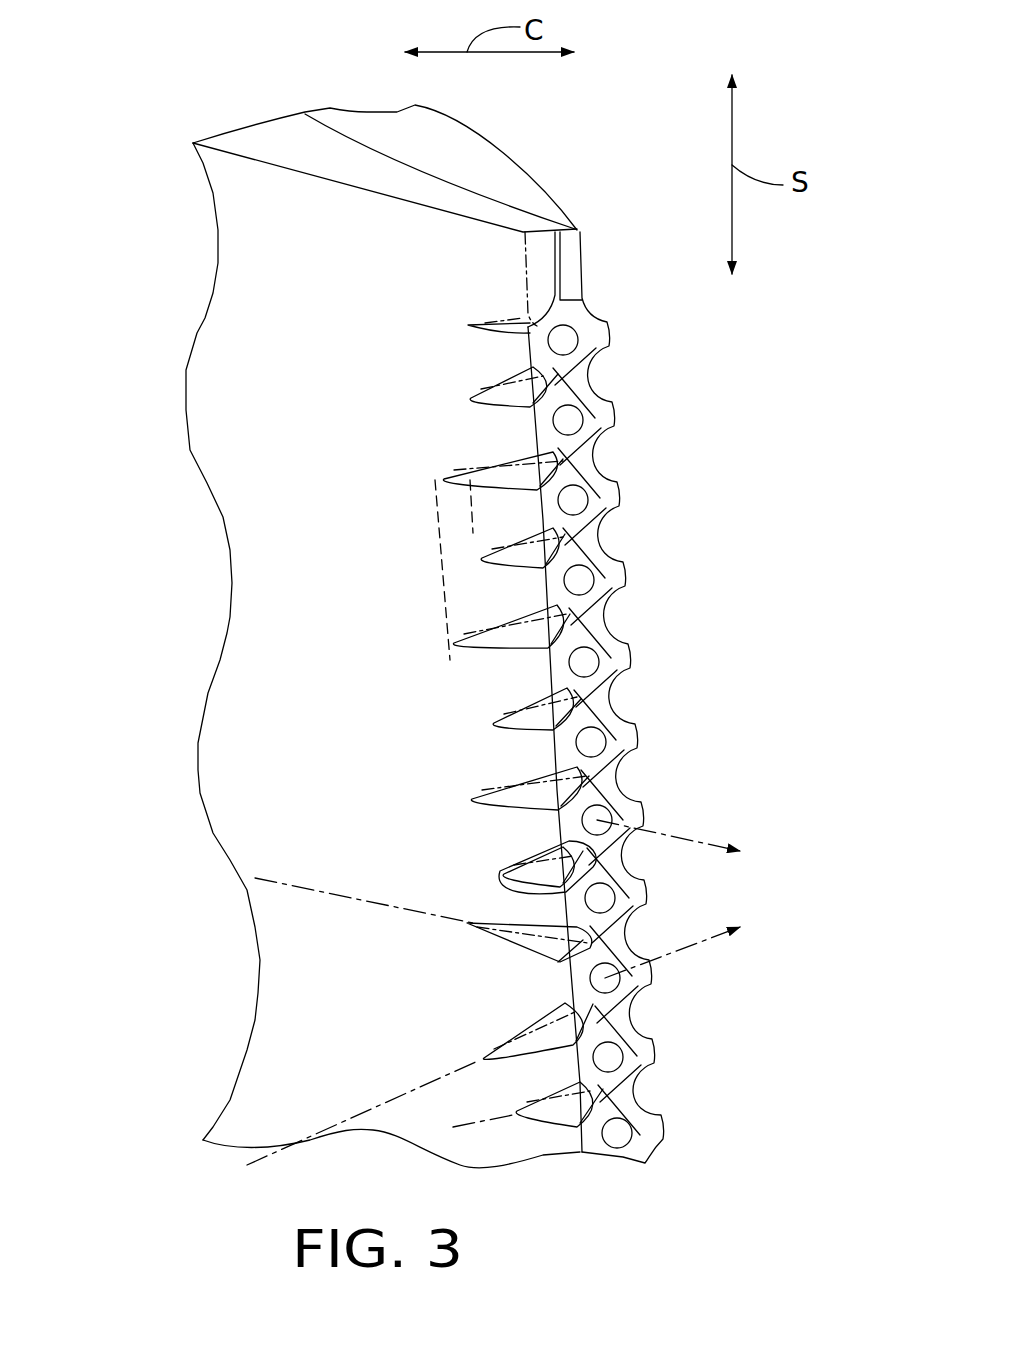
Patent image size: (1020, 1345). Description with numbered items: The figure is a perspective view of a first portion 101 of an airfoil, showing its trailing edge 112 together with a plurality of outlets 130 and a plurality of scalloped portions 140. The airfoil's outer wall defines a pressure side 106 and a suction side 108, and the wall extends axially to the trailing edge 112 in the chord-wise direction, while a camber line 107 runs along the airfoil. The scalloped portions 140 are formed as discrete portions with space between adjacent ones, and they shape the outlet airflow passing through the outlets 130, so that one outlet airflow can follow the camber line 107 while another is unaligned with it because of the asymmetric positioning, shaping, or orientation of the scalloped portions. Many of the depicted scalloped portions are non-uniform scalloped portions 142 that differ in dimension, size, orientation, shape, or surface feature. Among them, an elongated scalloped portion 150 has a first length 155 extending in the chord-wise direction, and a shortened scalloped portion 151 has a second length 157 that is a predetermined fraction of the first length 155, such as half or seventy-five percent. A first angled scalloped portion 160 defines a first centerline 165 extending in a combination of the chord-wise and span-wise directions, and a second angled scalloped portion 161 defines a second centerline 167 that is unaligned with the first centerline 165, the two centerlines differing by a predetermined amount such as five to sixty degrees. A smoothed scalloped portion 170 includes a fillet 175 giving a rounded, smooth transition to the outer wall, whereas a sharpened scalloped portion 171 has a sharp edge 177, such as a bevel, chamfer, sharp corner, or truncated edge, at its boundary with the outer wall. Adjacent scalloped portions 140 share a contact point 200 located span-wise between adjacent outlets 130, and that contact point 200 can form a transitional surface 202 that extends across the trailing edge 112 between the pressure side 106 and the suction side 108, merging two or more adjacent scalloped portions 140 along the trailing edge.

The first portion 101 is at (105, 141).
The pressure side 106 is at (453, 118).
The camber line 107 is at (377, 147).
The suction side 108 is at (333, 183).
The trailing edge 112 is at (562, 275).
The outlets 130 is at (583, 663).
The scalloped portions 140 is at (486, 380).
The non-uniform scalloped portions 142 is at (501, 659).
The elongated scalloped portion 150 is at (478, 644).
The shortened scalloped portion 151 is at (520, 556).
The first length 155 is at (441, 603).
The second length 157 is at (471, 528).
The first angled scalloped portion 160 is at (481, 944).
The second angled scalloped portion 161 is at (505, 1028).
The first centerline 165 is at (377, 903).
The second centerline 167 is at (397, 1097).
The smoothed scalloped portion 170 is at (461, 791).
The sharpened scalloped portion 171 is at (488, 869).
The fillet 175 is at (530, 777).
The sharp edge 177 is at (533, 850).
The contact point 200 is at (567, 383).
The transitional surface 202 is at (590, 590).